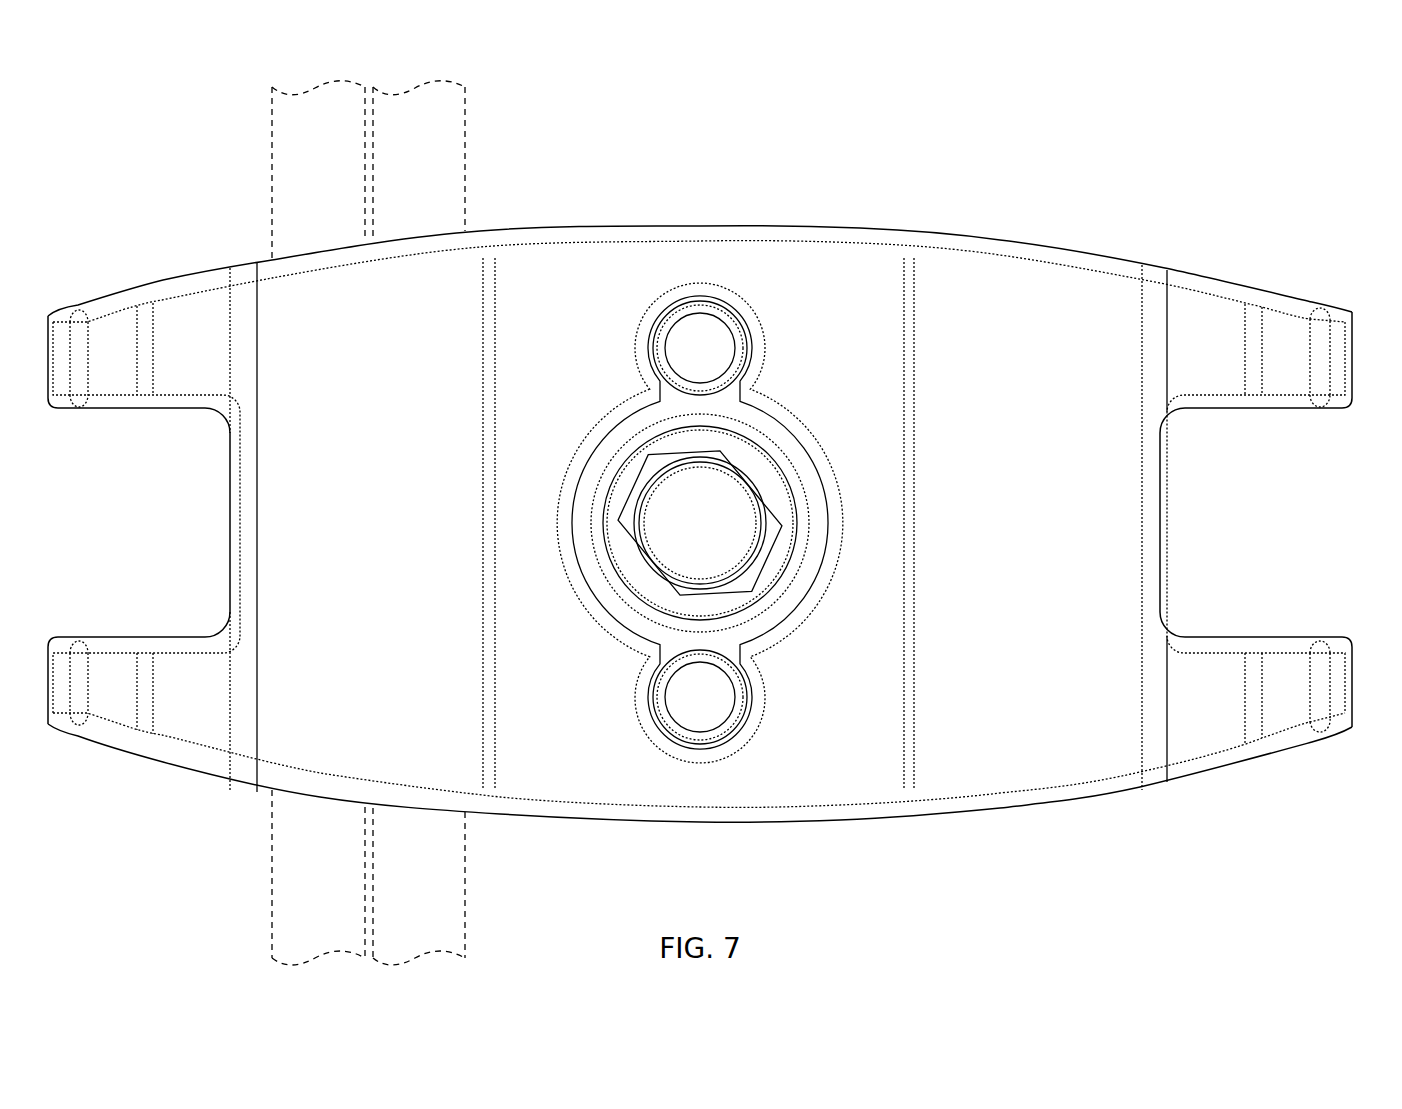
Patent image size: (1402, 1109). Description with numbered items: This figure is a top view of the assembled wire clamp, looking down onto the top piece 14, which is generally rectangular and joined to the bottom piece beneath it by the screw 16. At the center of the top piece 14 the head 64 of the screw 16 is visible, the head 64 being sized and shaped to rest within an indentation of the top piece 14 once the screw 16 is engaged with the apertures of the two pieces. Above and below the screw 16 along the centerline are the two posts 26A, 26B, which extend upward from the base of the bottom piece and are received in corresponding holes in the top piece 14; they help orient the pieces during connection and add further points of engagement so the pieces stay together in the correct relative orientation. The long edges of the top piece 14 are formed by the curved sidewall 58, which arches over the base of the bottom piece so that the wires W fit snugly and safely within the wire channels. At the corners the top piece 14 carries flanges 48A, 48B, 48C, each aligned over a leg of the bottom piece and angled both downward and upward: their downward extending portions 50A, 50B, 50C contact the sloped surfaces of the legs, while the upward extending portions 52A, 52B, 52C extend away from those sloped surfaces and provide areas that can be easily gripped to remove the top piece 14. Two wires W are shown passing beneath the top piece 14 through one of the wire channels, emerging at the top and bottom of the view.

The top piece 14 is at (996, 317).
The screw 16 is at (710, 497).
The post 26A is at (710, 345).
The post 26B is at (713, 697).
The flange 48A is at (112, 335).
The flange 48B is at (1227, 288).
The flange 48C is at (127, 715).
The downward extending portion 50A is at (197, 328).
The downward extending portion 50B is at (1208, 317).
The downward extending portion 50C is at (198, 727).
The upward extending portion 52A is at (70, 357).
The upward extending portion 52B is at (1317, 333).
The upward extending portion 52C is at (68, 705).
The curved sidewall 58 is at (545, 228).
The head 64 is at (737, 525).
The wires W is at (292, 930).